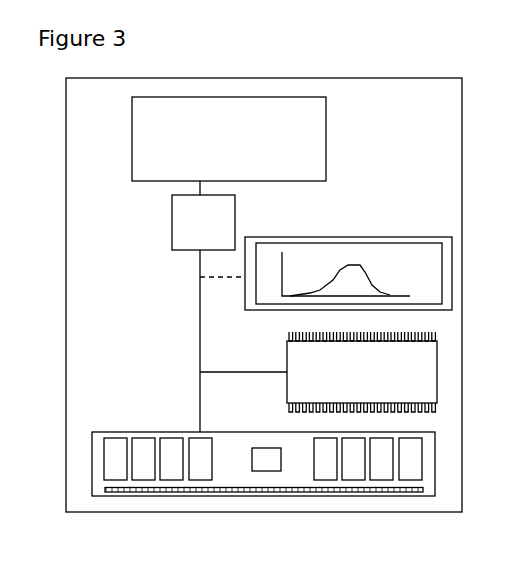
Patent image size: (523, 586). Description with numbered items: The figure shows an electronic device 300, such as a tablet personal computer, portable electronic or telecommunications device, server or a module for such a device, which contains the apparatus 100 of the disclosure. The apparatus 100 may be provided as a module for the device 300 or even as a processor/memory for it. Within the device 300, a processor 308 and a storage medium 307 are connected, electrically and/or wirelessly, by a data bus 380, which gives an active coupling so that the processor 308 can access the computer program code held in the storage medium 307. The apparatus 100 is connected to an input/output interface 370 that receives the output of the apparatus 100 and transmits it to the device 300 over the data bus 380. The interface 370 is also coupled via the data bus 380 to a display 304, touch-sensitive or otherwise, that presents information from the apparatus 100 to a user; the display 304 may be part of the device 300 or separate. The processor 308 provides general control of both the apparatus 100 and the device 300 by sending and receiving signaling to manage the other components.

The electronic device/apparatus 300 is at (132, 527).
The apparatus 100 is at (247, 148).
The input/output interface 370 is at (221, 232).
The data bus 380 is at (197, 336).
The display 304 is at (362, 253).
The processor 308 is at (380, 386).
The storage medium 307 is at (232, 472).